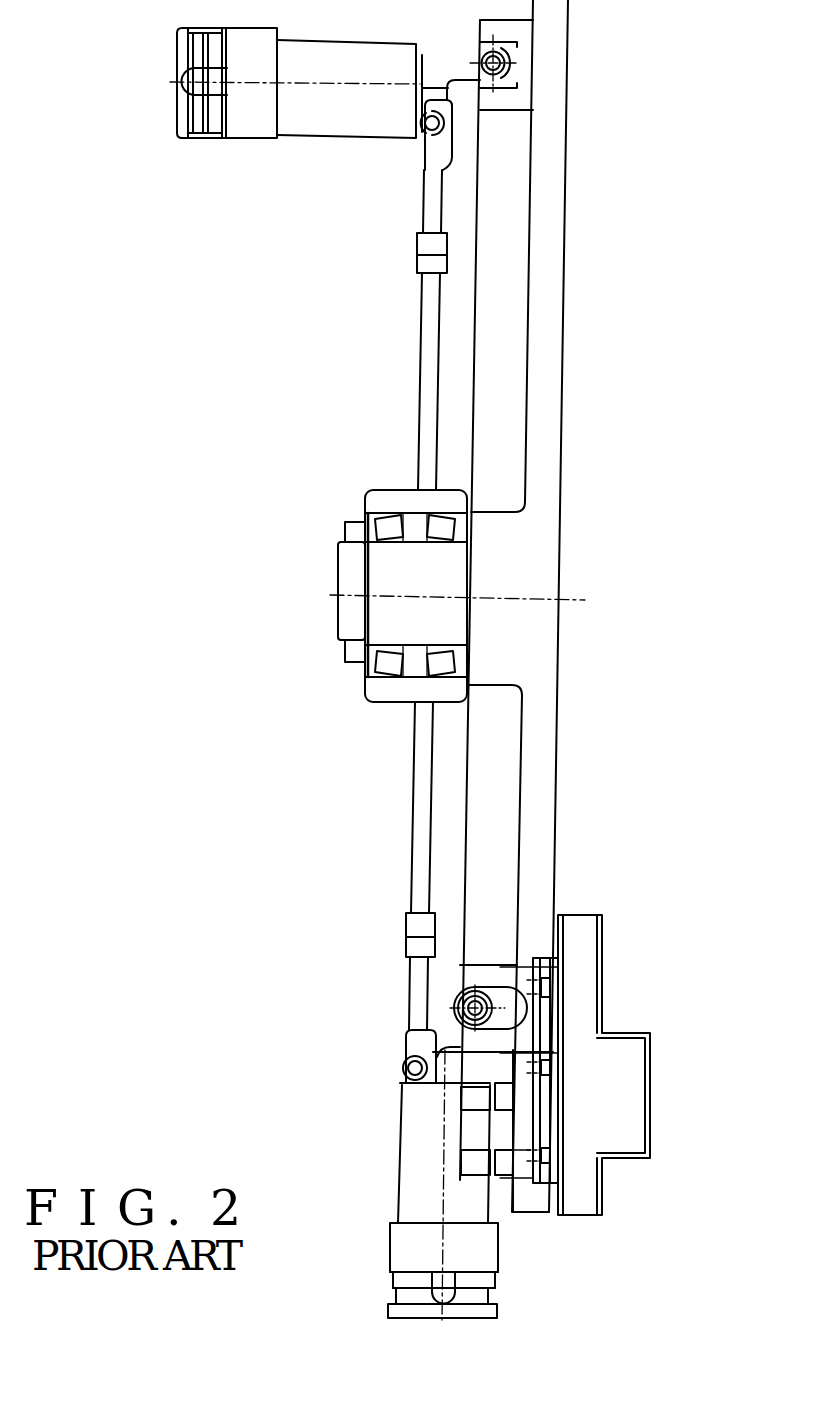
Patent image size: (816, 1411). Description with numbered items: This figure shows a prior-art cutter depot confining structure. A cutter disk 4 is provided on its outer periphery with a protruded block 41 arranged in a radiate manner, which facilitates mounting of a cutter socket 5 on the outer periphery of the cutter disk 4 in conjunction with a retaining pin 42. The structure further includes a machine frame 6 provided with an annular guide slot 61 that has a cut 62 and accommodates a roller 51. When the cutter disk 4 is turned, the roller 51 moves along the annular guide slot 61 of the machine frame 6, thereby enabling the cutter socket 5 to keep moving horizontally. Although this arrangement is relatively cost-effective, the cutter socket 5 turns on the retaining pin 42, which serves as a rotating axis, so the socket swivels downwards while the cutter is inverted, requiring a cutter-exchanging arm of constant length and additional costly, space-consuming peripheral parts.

The cutter disk 4 is at (432, 387).
The cutter socket 5 is at (315, 115).
The machine frame 6 is at (548, 320).
The protruded block 41 is at (443, 141).
The retaining pin 42 is at (426, 130).
The roller 51 is at (512, 56).
The annular guide slot 61 is at (512, 66).
The cut 62 is at (498, 1070).